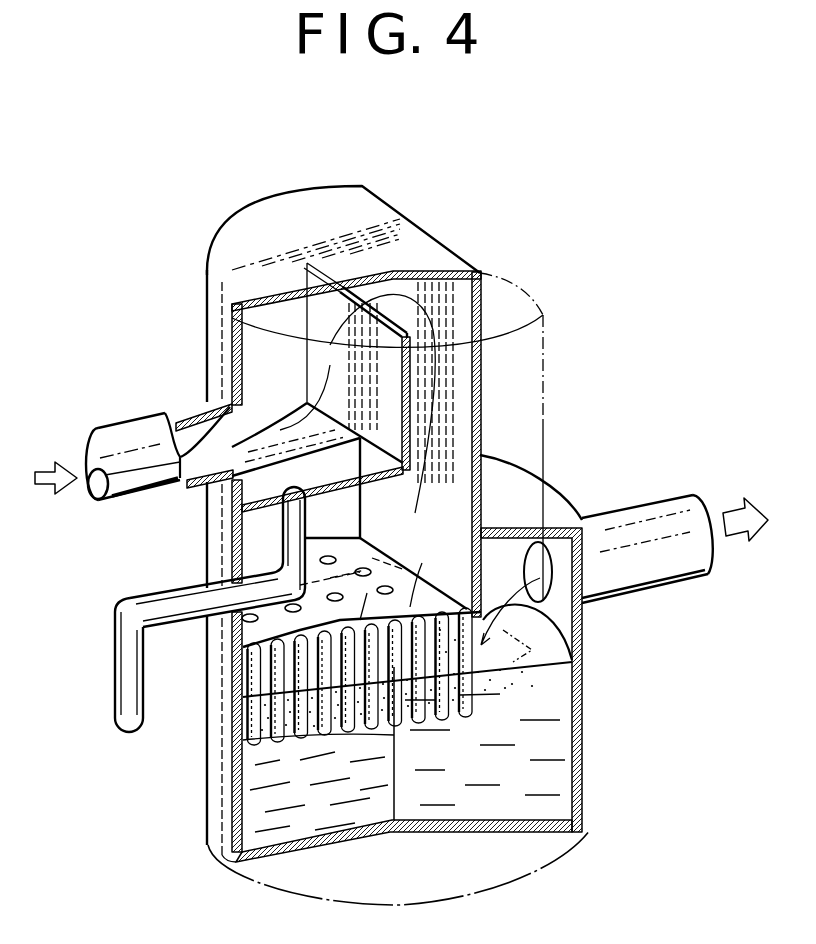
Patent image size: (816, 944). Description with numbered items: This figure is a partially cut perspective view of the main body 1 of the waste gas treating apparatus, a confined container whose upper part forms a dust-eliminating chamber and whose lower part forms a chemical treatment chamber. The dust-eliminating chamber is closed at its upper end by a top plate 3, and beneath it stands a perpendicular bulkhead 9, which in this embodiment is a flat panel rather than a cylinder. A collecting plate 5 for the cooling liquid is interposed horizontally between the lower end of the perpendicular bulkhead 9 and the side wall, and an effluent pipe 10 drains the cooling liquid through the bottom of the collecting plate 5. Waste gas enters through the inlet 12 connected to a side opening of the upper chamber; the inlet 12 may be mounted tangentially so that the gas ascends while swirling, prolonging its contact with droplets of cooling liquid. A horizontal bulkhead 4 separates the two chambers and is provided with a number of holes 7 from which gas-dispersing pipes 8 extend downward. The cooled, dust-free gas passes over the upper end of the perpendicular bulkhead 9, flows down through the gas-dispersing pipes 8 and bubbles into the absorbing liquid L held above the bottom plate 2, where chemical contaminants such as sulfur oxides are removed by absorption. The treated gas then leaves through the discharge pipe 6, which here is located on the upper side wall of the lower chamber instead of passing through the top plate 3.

The main body 1 is at (205, 308).
The bottom plate 2 is at (336, 843).
The top plate 3 is at (360, 207).
The horizontal bulkhead 4 is at (255, 635).
The collecting plate 5 is at (255, 487).
The discharge pipe 6 is at (662, 574).
The holes 7 is at (243, 632).
The gas-dispersing pipes 8 is at (470, 737).
The perpendicular bulkhead 9 is at (412, 393).
The effluent pipe 10 is at (117, 645).
The inlet 12 is at (128, 432).
The absorbing liquid L is at (477, 800).